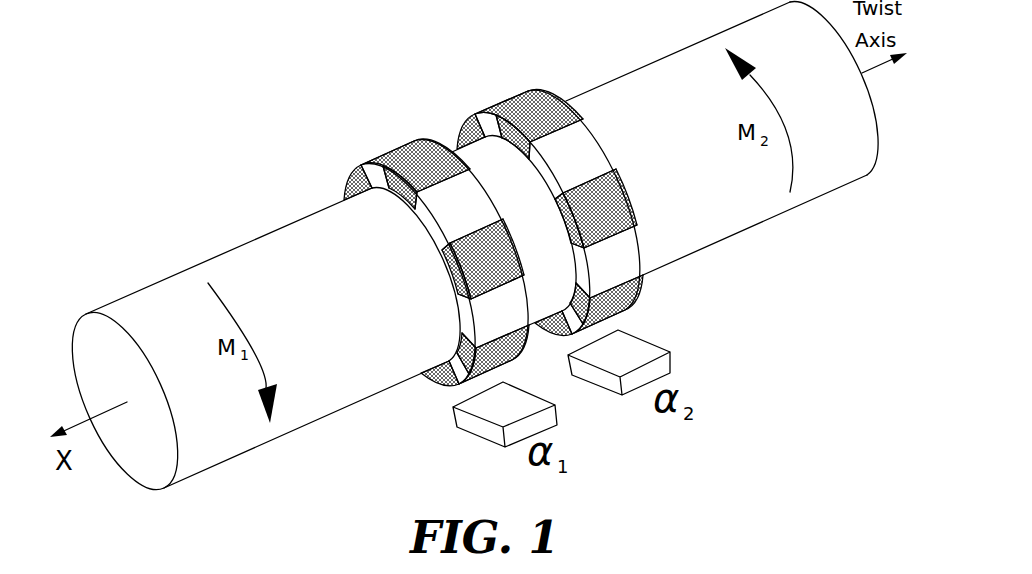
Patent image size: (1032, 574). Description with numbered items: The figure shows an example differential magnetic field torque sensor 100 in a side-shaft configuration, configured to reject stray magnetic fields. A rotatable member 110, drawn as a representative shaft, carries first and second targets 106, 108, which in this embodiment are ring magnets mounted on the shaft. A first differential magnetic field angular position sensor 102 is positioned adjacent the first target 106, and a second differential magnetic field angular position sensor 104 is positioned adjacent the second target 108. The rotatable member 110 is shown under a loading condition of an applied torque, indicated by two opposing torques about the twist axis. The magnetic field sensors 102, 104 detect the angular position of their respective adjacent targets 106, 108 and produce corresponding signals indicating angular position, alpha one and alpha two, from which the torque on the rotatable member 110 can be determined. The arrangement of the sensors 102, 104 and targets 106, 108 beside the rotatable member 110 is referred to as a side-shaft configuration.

The differential magnetic field torque sensor 100 is at (225, 98).
The first differential magnetic field angular position sensor 102 is at (468, 433).
The second differential magnetic field angular position sensor 104 is at (650, 342).
The first target 106 is at (385, 153).
The second target 108 is at (513, 97).
The rotatable member 110 is at (190, 307).